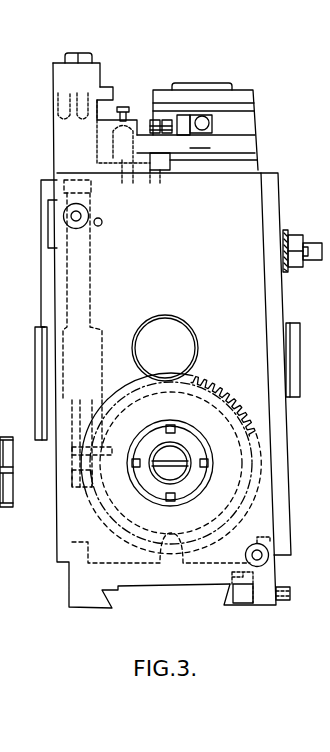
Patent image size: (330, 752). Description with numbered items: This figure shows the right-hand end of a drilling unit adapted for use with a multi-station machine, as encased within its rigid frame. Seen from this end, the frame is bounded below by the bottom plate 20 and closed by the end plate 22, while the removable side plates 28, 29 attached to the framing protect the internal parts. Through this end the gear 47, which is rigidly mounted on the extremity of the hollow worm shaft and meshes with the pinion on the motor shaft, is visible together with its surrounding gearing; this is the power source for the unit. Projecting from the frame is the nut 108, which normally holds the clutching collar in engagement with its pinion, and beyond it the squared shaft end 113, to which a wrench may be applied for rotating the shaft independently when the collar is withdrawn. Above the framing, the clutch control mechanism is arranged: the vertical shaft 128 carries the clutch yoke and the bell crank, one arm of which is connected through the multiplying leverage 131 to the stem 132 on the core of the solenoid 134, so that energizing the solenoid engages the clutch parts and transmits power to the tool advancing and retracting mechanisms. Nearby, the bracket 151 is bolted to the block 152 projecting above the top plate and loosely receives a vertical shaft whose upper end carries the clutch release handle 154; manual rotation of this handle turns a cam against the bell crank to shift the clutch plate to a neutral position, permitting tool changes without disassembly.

The bottom plate 20 is at (186, 586).
The end plate 22 is at (164, 335).
The side plate 28 is at (284, 413).
The side plate 29 is at (50, 307).
The gear 47 is at (232, 392).
The nut 108 is at (296, 233).
The squared shaft end 113 is at (321, 259).
The vertical shaft 128 is at (93, 276).
The multiplying leverage 131 is at (228, 151).
The stem 132 is at (212, 121).
The solenoid 134 is at (238, 125).
The bracket 151 is at (109, 93).
The block 152 is at (68, 145).
The clutch release handle 154 is at (97, 68).